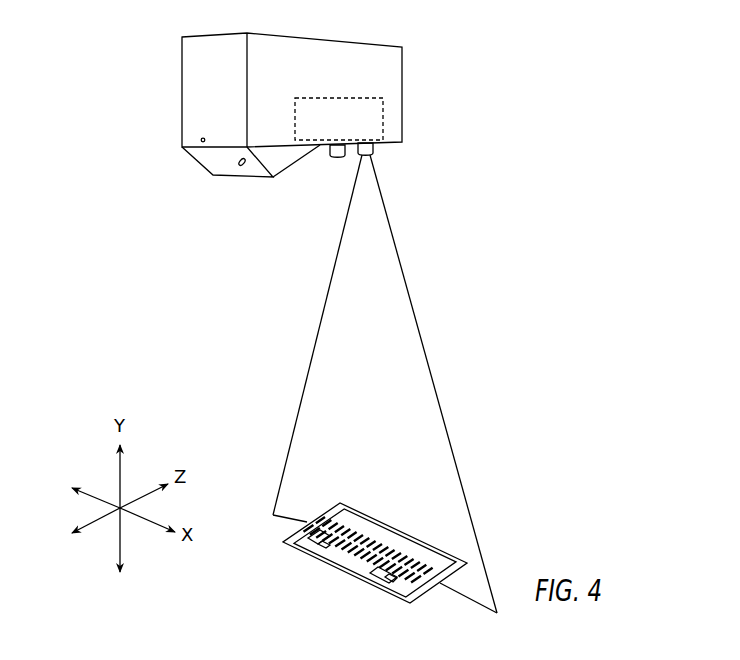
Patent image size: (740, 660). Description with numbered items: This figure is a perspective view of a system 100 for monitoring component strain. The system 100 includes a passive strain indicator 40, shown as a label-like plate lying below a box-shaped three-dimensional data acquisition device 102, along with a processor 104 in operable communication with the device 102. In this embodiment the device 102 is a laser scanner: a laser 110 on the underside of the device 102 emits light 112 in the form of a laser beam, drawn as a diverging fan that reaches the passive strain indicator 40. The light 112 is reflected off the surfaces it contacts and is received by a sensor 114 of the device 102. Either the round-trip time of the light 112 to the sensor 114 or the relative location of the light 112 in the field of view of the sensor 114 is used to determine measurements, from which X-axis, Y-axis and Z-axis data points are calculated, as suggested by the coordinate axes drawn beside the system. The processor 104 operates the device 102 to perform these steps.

The system 100 is at (540, 119).
The three-dimensional data acquisition device 102 is at (424, 101).
The processor 104 is at (334, 89).
The laser 110 is at (382, 148).
The light 112 is at (419, 310).
The sensor 114 is at (234, 179).
The passive strain indicator 40 is at (333, 577).